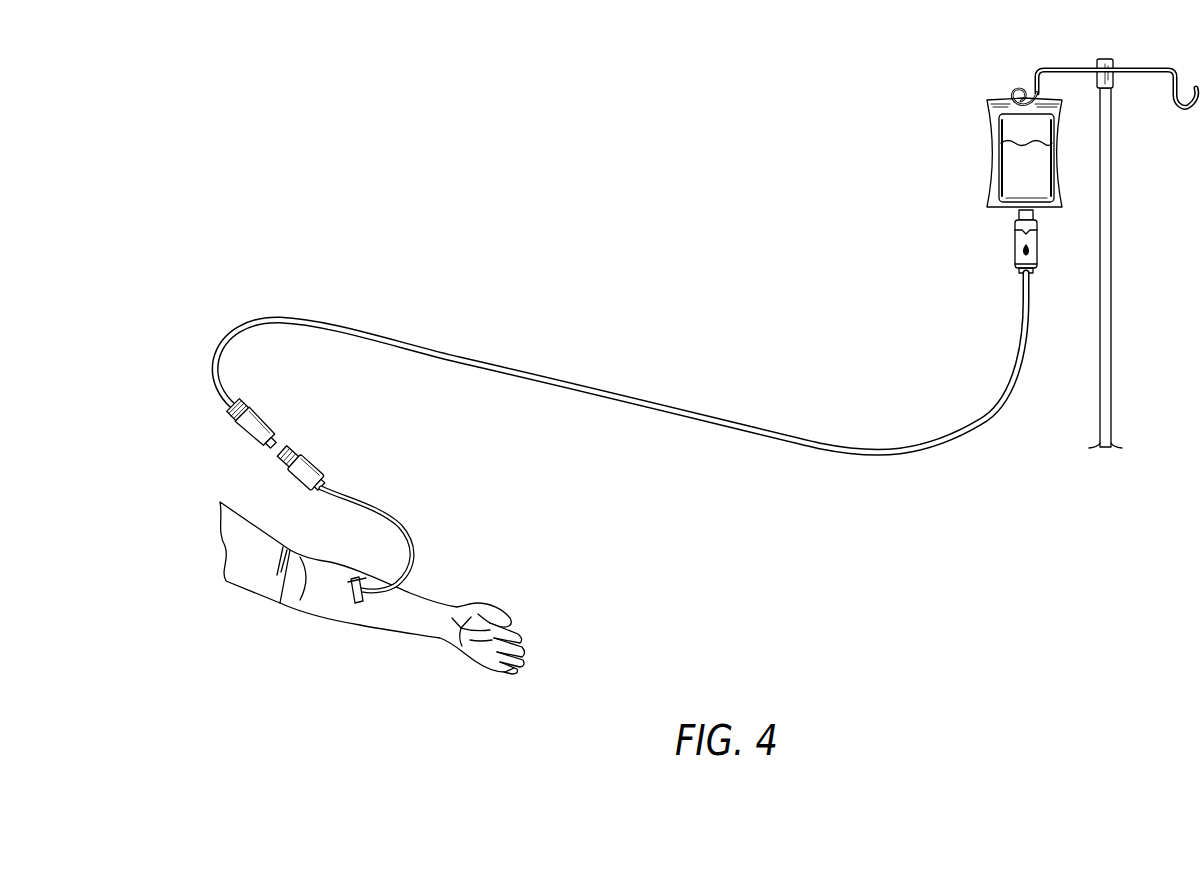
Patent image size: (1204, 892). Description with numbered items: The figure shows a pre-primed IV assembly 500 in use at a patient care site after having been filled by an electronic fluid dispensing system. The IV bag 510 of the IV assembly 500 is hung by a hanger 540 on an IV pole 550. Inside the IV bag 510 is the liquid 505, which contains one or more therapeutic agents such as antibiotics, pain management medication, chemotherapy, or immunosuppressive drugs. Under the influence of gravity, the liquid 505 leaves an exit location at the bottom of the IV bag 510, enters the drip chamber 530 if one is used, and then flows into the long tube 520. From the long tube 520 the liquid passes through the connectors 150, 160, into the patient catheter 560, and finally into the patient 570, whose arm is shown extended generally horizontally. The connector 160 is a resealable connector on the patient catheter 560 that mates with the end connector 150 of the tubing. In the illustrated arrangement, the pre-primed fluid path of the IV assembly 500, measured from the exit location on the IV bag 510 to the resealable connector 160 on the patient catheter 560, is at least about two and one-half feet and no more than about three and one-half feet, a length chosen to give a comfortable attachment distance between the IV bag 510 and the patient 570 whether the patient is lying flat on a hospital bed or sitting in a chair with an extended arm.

The pre-primed IV assembly 500 is at (856, 112).
The liquid 505 is at (1012, 160).
The IV bag 510 is at (988, 185).
The long tube 520 is at (597, 390).
The drip chamber 530 is at (1014, 249).
The hanger 540 is at (1011, 101).
The IV pole 550 is at (1112, 253).
The patient catheter 560 is at (413, 525).
The patient 570 is at (380, 638).
The connector 150 is at (243, 434).
The resealable connector 160 is at (303, 465).